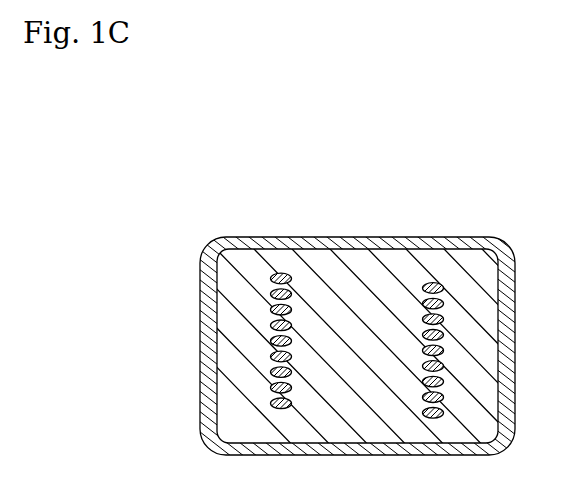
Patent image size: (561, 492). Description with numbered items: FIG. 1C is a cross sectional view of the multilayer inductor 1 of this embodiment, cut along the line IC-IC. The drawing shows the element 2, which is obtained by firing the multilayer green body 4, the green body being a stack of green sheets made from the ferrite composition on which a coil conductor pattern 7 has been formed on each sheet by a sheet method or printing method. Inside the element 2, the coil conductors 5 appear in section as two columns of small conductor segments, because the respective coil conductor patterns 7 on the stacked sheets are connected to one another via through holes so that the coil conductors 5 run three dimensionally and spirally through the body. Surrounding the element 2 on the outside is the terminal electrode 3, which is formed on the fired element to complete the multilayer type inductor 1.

The power storage device 1 is at (493, 176).
The element 2 is at (413, 201).
The terminal electrode 3 is at (507, 341).
The multilayer green body 4 is at (376, 258).
The coil conductor 5 is at (343, 343).
The coil conductor pattern 7 is at (287, 409).